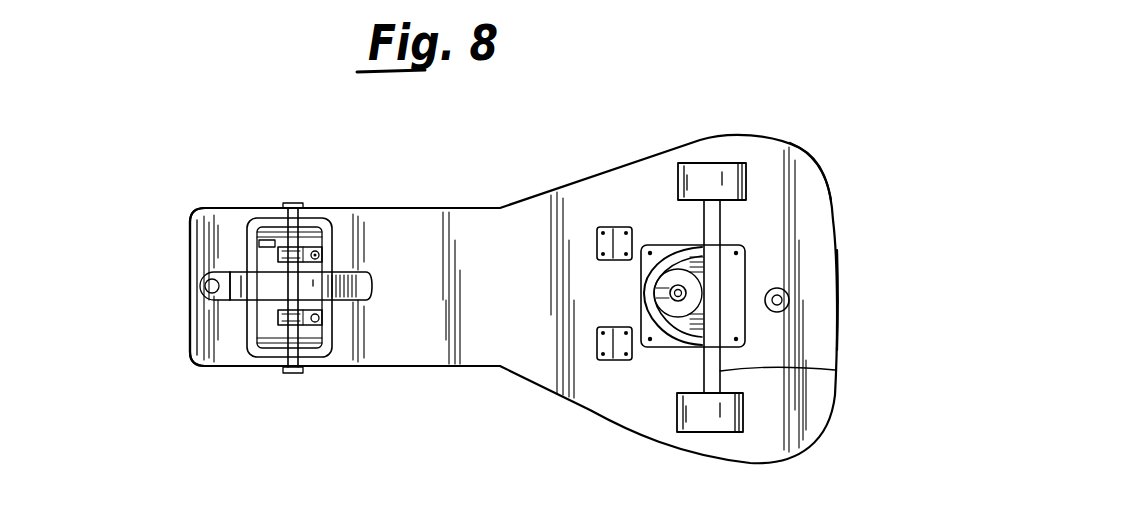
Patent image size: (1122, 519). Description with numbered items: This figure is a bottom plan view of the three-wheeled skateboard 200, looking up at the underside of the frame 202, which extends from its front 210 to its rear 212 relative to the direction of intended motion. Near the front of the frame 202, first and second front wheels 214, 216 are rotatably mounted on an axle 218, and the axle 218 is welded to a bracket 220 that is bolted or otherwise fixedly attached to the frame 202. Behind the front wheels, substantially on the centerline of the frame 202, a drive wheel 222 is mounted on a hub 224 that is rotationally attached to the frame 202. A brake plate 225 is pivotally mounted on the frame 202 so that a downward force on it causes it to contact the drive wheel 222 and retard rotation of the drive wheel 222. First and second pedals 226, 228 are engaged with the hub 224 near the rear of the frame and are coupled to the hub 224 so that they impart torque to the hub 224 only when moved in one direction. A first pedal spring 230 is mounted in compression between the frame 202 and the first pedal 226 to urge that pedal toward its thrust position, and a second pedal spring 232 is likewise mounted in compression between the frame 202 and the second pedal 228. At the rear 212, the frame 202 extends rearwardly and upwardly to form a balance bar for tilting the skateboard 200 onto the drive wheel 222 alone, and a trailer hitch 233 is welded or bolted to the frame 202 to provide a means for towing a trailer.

The skateboard 200 is at (470, 405).
The frame 202 is at (823, 197).
The front 210 is at (840, 281).
The rear 212 is at (190, 218).
The first front wheel 214 is at (746, 420).
The second front wheel 216 is at (748, 176).
The axle 218 is at (834, 370).
The bracket 220 is at (652, 240).
The drive wheel 222 is at (240, 292).
The hub 224 is at (315, 208).
The brake plate 225 is at (252, 208).
The first pedal 226 is at (265, 350).
The second pedal 228 is at (272, 208).
The first pedal spring 230 is at (330, 348).
The second pedal spring 232 is at (337, 208).
The trailer hitch 233 is at (200, 288).